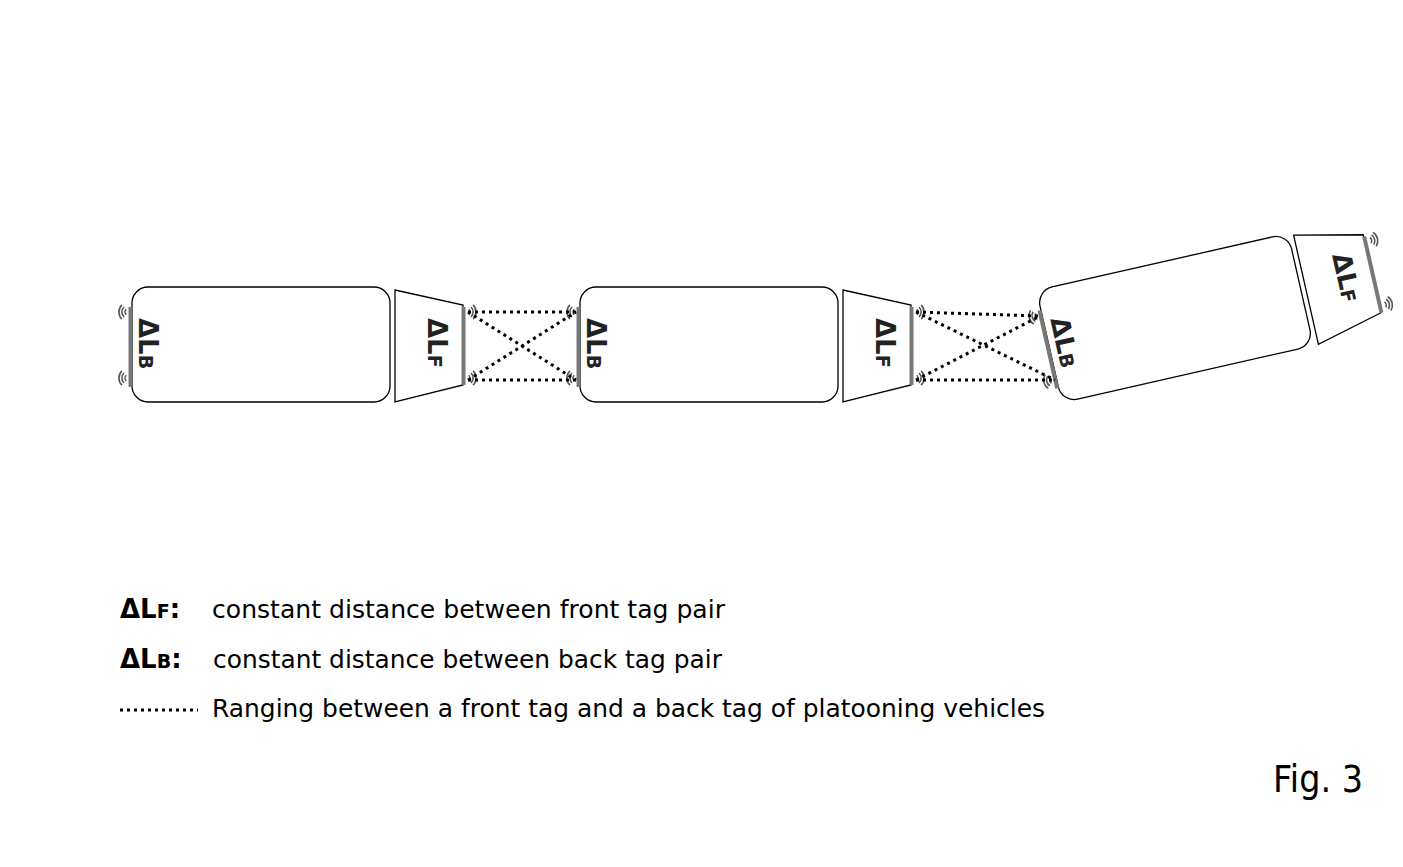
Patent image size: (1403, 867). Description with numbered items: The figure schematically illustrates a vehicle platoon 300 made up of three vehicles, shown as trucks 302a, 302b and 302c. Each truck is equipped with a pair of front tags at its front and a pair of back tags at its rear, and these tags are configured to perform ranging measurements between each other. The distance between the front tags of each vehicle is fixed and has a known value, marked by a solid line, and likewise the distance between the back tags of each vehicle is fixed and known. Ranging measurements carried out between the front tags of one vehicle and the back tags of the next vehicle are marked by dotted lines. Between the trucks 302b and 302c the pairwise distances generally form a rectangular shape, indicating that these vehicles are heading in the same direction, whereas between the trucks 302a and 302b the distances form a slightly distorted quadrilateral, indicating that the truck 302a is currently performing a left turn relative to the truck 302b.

The vehicle platoon 300 is at (250, 93).
The truck 302a is at (1162, 263).
The truck 302b is at (706, 288).
The truck 302c is at (258, 288).